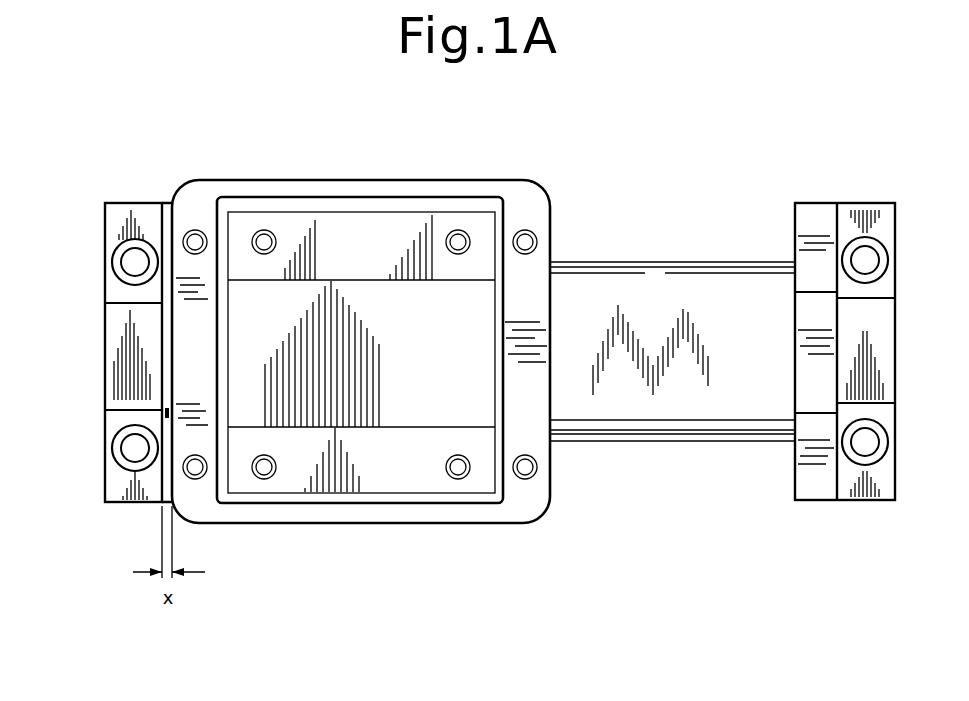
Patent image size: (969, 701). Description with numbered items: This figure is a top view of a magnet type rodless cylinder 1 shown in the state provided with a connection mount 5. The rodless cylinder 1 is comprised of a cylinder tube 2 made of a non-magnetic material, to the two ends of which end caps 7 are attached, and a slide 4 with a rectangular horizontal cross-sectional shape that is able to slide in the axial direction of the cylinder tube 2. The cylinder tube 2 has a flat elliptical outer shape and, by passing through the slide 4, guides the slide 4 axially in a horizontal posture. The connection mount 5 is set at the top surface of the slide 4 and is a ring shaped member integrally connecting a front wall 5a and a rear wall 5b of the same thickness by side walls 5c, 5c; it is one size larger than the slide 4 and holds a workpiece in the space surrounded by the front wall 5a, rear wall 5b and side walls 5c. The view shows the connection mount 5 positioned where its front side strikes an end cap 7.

The magnet type rodless cylinder 1 is at (706, 144).
The cylinder tube 2 is at (655, 278).
The slide 4 is at (355, 300).
The connection mount 5 is at (432, 182).
The front wall 5a is at (187, 368).
The rear wall 5b is at (535, 383).
The side walls 5c is at (287, 188).
The end cap 7 is at (147, 207).